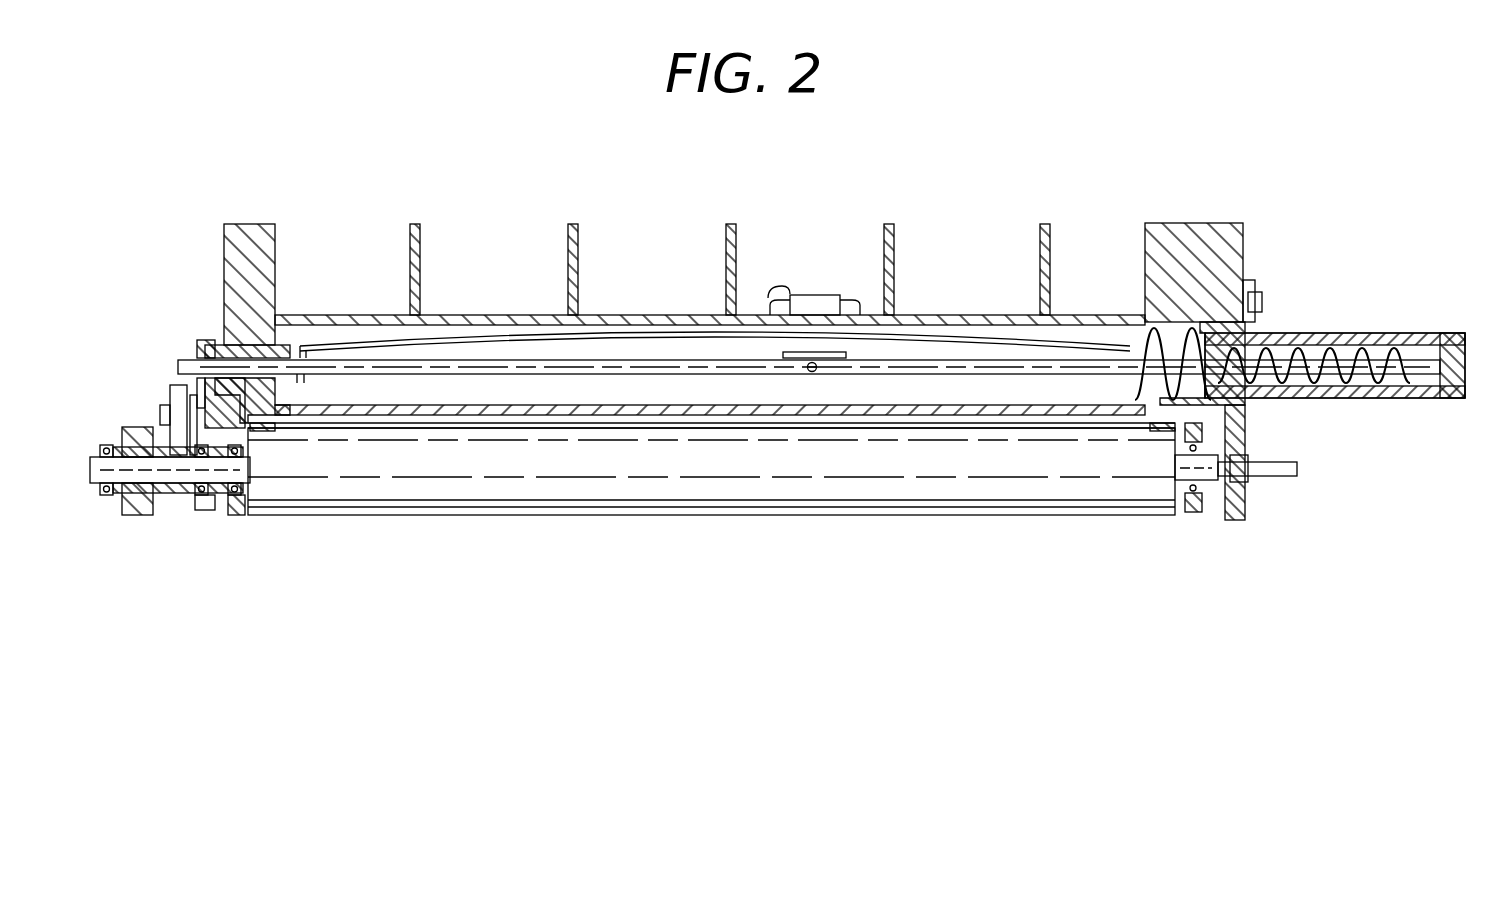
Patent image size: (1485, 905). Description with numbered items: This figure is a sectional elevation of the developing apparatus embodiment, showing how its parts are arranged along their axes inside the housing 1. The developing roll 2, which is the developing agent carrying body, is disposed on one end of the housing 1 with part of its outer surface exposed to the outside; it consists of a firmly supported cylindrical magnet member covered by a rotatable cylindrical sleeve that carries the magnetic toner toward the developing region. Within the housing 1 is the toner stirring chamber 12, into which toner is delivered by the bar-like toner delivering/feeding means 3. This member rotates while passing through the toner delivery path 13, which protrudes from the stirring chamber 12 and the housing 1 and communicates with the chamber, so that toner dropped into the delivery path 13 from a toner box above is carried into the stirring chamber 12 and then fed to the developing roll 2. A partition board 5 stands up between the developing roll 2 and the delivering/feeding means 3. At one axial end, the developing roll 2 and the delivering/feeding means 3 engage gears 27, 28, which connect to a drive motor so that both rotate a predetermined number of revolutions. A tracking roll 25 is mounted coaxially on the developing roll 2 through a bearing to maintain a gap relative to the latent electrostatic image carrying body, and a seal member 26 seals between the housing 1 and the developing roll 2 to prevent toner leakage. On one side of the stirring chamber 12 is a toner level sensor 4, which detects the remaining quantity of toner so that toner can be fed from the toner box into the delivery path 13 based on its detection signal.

The housing 1 is at (1195, 212).
The developing roll 2 is at (560, 535).
The toner delivering/feeding means 3 is at (987, 345).
The toner level sensor 4 is at (794, 280).
The partition board 5 is at (802, 426).
The toner stirring chamber 12 is at (1010, 393).
The toner delivery path 13 is at (1388, 352).
The tracking roll 25 is at (238, 515).
The seal member 26 is at (270, 432).
The gear 27 is at (132, 426).
The gear 28 is at (206, 338).